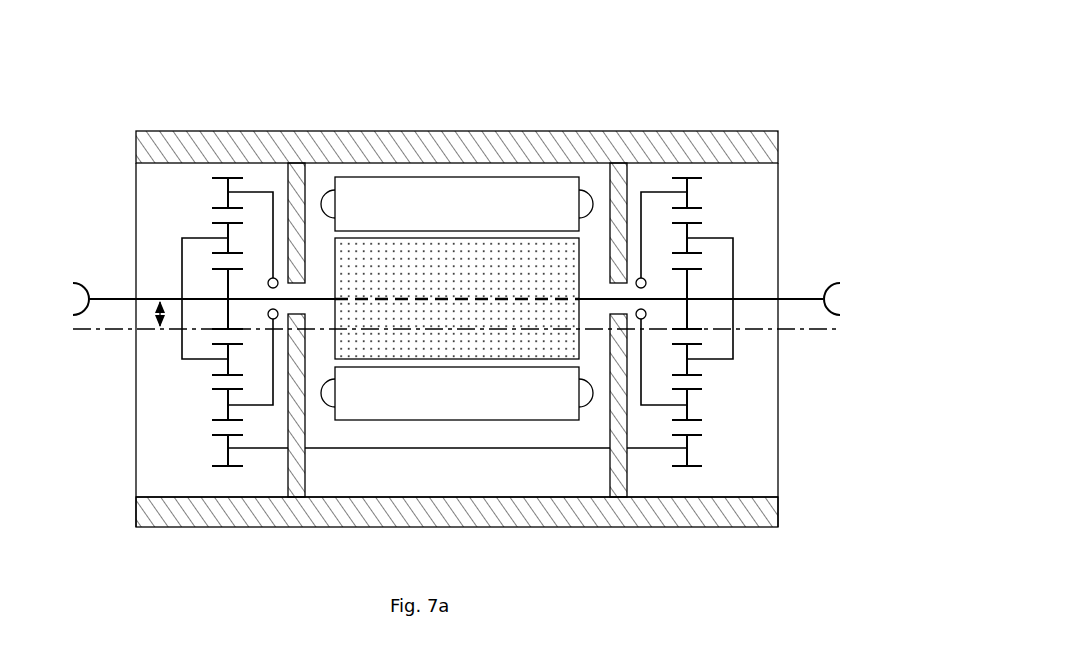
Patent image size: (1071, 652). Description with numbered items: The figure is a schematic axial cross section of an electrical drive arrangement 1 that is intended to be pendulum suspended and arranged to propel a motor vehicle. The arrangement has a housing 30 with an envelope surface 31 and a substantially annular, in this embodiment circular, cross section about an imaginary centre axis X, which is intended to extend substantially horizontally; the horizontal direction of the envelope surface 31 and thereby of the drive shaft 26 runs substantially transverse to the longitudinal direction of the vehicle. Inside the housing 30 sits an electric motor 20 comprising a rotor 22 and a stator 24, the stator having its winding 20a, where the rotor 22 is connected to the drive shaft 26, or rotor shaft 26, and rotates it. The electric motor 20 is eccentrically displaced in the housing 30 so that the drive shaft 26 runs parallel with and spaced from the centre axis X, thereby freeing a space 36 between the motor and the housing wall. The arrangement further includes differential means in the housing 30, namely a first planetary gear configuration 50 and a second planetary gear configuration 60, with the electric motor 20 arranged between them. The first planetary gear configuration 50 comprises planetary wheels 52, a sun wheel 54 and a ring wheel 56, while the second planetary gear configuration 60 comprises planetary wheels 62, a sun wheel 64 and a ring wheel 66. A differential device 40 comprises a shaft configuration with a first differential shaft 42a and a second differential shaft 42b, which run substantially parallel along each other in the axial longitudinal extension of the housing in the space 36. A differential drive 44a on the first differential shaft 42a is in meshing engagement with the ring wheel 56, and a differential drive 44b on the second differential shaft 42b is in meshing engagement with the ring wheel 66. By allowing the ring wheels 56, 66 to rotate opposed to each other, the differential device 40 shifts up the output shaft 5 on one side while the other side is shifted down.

The electrical drive arrangement 1 is at (631, 107).
The output shaft 5 is at (118, 298).
The electric motor 20 is at (452, 319).
The stator winding 20a is at (397, 177).
The rotor 22 is at (472, 352).
The stator 24 is at (397, 421).
The drive shaft 26 is at (550, 299).
The housing 30 is at (342, 129).
The envelope surface 31 is at (592, 530).
The space 36 is at (477, 470).
The differential device 40 is at (227, 480).
The first differential shaft 42a is at (635, 447).
The second differential shaft 42b is at (260, 448).
The differential drive 44a is at (735, 505).
The differential drive 44b is at (172, 503).
The first planetary gear configuration 50 is at (182, 318).
The planetary wheel 52 is at (228, 412).
The sun wheel 54 is at (228, 367).
The ring wheel 56 is at (228, 458).
The second planetary gear configuration 60 is at (735, 322).
The planetary wheel 62 is at (687, 412).
The sun wheel 64 is at (687, 365).
The ring wheel 66 is at (687, 458).
The centre axis X is at (108, 329).